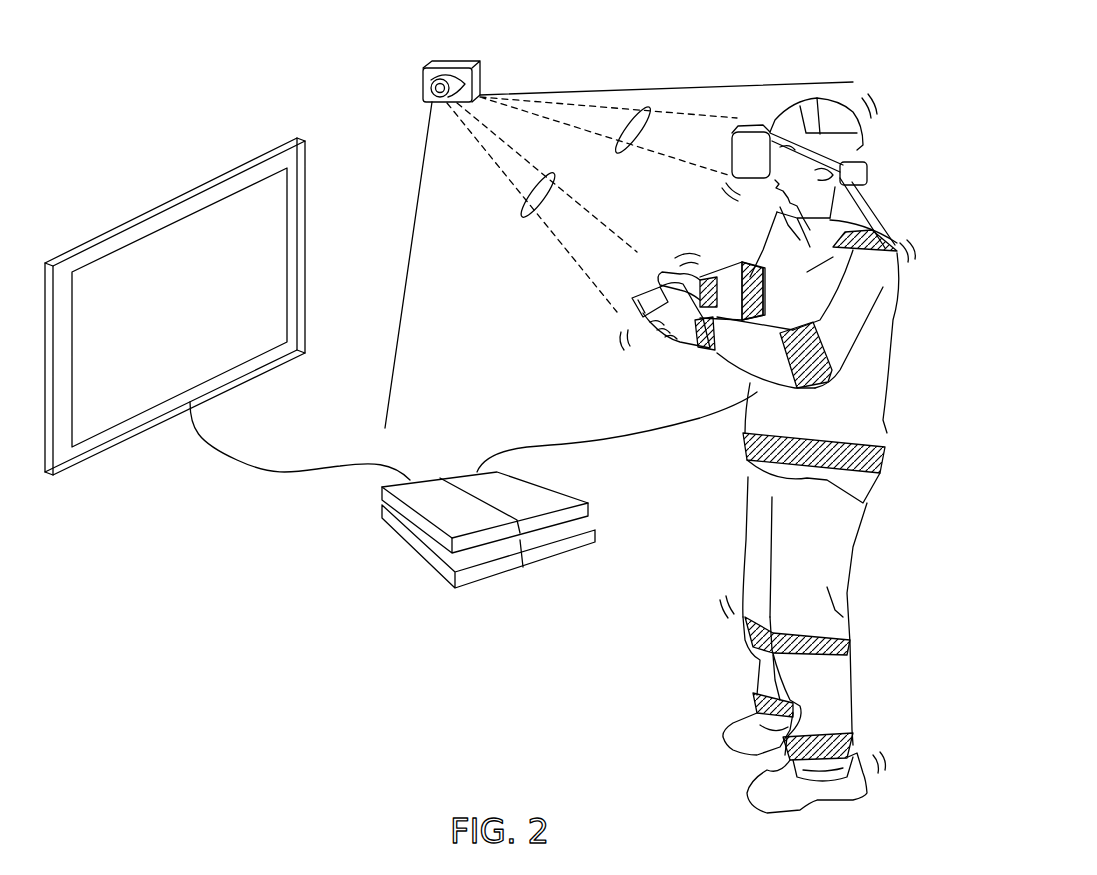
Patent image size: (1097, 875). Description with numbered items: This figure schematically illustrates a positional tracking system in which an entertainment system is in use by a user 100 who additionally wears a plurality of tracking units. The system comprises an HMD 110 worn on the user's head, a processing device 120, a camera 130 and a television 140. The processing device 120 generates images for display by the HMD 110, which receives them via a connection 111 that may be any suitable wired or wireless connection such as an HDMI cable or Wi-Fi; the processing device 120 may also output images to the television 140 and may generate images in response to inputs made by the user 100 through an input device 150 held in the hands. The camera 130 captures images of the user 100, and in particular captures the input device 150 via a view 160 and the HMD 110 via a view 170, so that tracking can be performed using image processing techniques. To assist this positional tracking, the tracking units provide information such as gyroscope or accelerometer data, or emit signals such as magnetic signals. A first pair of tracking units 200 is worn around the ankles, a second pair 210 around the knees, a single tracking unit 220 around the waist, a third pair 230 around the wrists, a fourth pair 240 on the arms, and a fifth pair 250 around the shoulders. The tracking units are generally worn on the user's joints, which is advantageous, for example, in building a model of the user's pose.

The user 100 is at (873, 503).
The HMD 110 is at (759, 112).
The connection 111 is at (683, 430).
The processing device 120 is at (560, 490).
The camera 130 is at (455, 62).
The television 140 is at (173, 200).
The input device 150 is at (637, 313).
The view 160 is at (523, 218).
The view 170 is at (648, 107).
The first pair of tracking units 200 is at (850, 733).
The second pair of tracking units 210 is at (850, 643).
The tracking unit 220 is at (890, 457).
The third pair of tracking units 230 is at (690, 354).
The fourth pair of tracking units 240 is at (843, 387).
The fifth pair of tracking units 250 is at (887, 240).